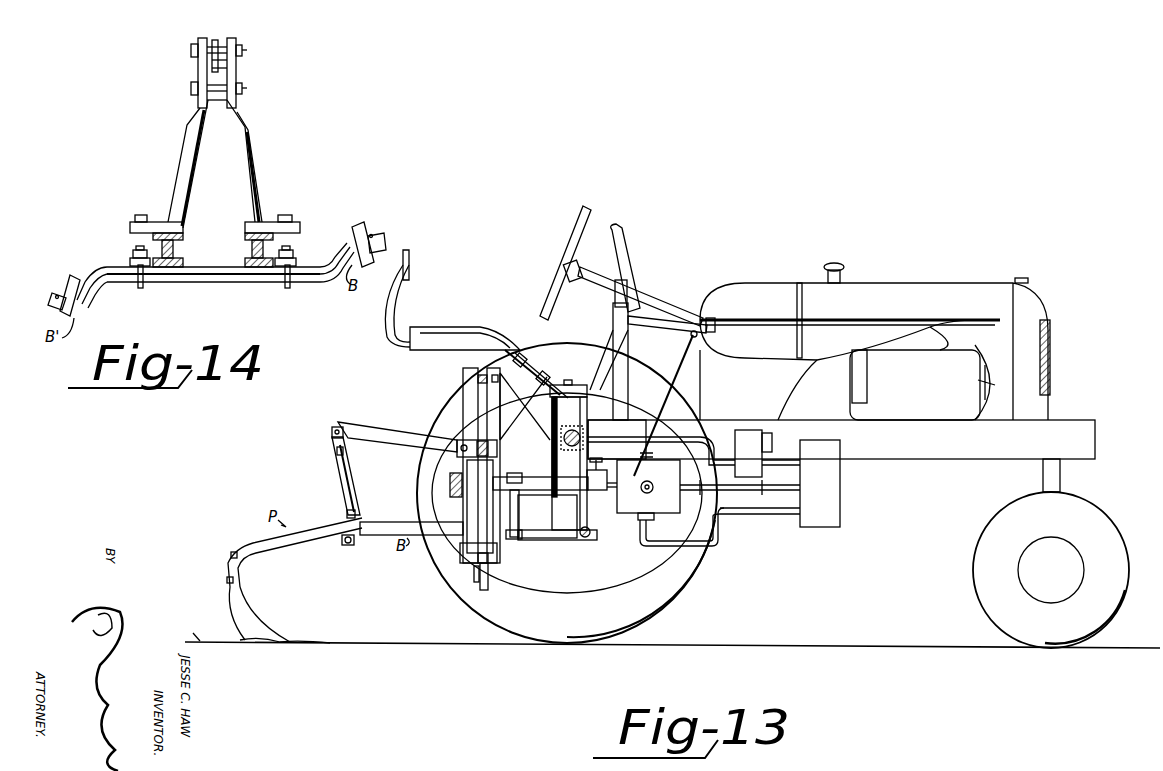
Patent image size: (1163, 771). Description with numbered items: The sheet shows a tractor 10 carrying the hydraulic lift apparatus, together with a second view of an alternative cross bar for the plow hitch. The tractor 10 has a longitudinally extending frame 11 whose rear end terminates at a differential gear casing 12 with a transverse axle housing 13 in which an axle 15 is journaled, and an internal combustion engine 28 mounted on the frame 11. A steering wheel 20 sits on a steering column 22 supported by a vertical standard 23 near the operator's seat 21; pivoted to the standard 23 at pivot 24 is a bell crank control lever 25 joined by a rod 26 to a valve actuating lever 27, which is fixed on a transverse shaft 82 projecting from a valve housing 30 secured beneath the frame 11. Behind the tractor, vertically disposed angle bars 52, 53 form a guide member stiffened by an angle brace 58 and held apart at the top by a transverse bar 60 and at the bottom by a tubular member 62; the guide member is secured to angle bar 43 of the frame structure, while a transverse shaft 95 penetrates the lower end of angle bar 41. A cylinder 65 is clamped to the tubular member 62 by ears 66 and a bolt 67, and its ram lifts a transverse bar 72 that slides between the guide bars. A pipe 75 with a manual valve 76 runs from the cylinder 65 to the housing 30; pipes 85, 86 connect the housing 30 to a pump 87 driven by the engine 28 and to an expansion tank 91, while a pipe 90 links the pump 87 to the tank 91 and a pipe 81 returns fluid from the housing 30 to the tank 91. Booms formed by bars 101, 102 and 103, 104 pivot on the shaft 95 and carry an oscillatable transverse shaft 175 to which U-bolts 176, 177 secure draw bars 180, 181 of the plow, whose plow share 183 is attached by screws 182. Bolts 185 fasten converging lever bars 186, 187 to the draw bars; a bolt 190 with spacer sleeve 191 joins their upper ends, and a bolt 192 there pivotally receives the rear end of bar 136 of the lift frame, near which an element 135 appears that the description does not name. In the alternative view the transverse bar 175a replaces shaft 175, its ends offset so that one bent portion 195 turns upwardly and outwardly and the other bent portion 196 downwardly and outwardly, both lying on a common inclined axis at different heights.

In FIG. 13, the tractor 10 is at (890, 460).
In FIG. 13, the frame 11 is at (648, 425).
In FIG. 13, the differential gear casing 12 is at (577, 376).
In FIG. 13, the axle housing 13 is at (588, 430).
In FIG. 13, the axle 15 is at (582, 440).
In FIG. 13, the steering wheel 20 is at (548, 290).
In FIG. 13, the operator's seat 21 is at (455, 338).
In FIG. 13, the steering column 22 is at (648, 297).
In FIG. 13, the standard 23 is at (626, 385).
In FIG. 13, the pivot 24 is at (637, 325).
In FIG. 13, the bell crank control lever 25 is at (625, 256).
In FIG. 13, the rod 26 is at (712, 385).
In FIG. 13, the valve actuating lever 27 is at (650, 482).
In FIG. 13, the internal combustion engine 28 is at (920, 420).
In FIG. 13, the valve housing 30 is at (680, 510).
In FIG. 13, the angle bar 41 is at (578, 512).
In FIG. 13, the angle bar 43 is at (552, 541).
In FIG. 13, the angle bar 52 is at (465, 382).
In FIG. 13, the angle bar 53 is at (494, 374).
In FIG. 13, the angle brace 58 is at (536, 444).
In FIG. 13, the transverse bar 60 is at (462, 369).
In FIG. 13, the tubular member 62 is at (490, 560).
In FIG. 13, the cylinder 65 is at (467, 543).
In FIG. 13, the ears 66 is at (485, 590).
In FIG. 13, the bolt 67 is at (470, 576).
In FIG. 13, the transverse bar 72 is at (475, 439).
In FIG. 13, the pipe 75 is at (520, 508).
In FIG. 13, the valve 76 is at (600, 478).
In FIG. 13, the pipe 81 is at (760, 514).
In FIG. 13, the transverse shaft 82 is at (639, 492).
In FIG. 13, the pipe 85 is at (733, 430).
In FIG. 13, the pipe 86 is at (682, 549).
In FIG. 13, the hydraulic pump 87 is at (752, 430).
In FIG. 13, the pipe 90 is at (795, 460).
In FIG. 13, the expansion tank 91 is at (840, 497).
In FIG. 13, the transverse shaft 95 is at (592, 540).
In FIG. 14, the bar 101 is at (366, 230).
In FIG. 14, the bar 102 is at (358, 232).
In FIG. 14, the bar 103 is at (84, 283).
In FIG. 13, the bar 103 is at (408, 531).
In FIG. 14, the bar 104 is at (70, 275).
In FIG. 13, the pivot pin 135 is at (462, 458).
In FIG. 14, the bar 136 is at (214, 40).
In FIG. 13, the bar 136 is at (375, 445).
In FIG. 13, the transverse shaft 175 is at (347, 545).
In FIG. 14, the transverse bar 175a is at (215, 283).
In FIG. 14, the U-bolt 176 is at (288, 289).
In FIG. 13, the U-bolt 176 is at (356, 545).
In FIG. 14, the U-bolt 177 is at (141, 289).
In FIG. 14, the draw bar 180 is at (253, 249).
In FIG. 14, the draw bar 181 is at (173, 250).
In FIG. 13, the screws 182 is at (241, 580).
In FIG. 13, the plow share 183 is at (270, 622).
In FIG. 14, the bolts 185 is at (157, 208).
In FIG. 13, the bolts 185 is at (346, 513).
In FIG. 14, the lever bar 186 is at (256, 165).
In FIG. 13, the lever bar 186 is at (356, 492).
In FIG. 14, the lever bar 187 is at (180, 172).
In FIG. 14, the bolt 190 is at (247, 89).
In FIG. 13, the bolt 190 is at (337, 453).
In FIG. 14, the spacer sleeve 191 is at (214, 96).
In FIG. 14, the bolt 192 is at (246, 50).
In FIG. 13, the bolt 192 is at (343, 428).
In FIG. 14, the bent portion 195 is at (100, 275).
In FIG. 14, the bent portion 196 is at (336, 284).